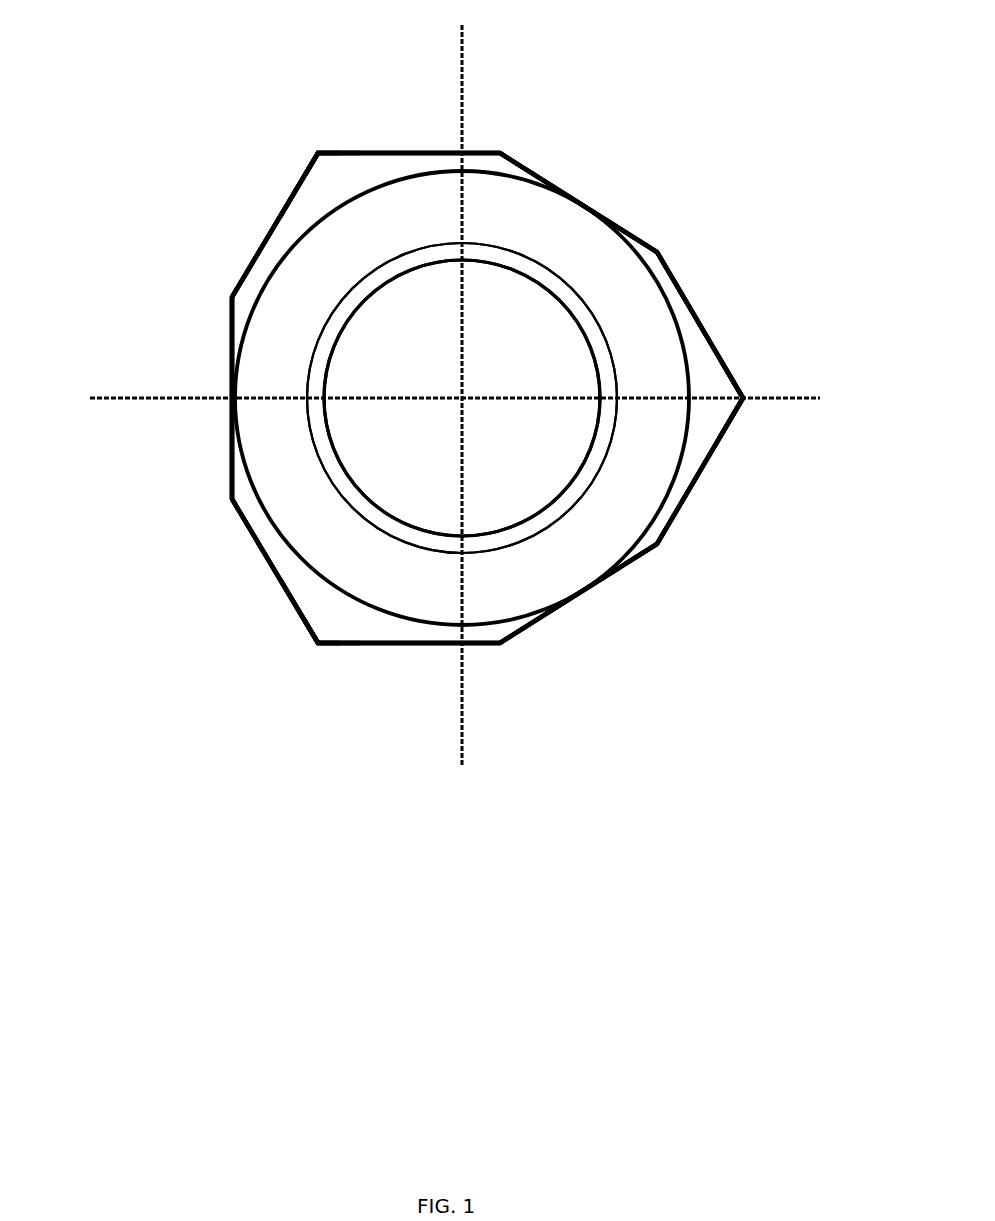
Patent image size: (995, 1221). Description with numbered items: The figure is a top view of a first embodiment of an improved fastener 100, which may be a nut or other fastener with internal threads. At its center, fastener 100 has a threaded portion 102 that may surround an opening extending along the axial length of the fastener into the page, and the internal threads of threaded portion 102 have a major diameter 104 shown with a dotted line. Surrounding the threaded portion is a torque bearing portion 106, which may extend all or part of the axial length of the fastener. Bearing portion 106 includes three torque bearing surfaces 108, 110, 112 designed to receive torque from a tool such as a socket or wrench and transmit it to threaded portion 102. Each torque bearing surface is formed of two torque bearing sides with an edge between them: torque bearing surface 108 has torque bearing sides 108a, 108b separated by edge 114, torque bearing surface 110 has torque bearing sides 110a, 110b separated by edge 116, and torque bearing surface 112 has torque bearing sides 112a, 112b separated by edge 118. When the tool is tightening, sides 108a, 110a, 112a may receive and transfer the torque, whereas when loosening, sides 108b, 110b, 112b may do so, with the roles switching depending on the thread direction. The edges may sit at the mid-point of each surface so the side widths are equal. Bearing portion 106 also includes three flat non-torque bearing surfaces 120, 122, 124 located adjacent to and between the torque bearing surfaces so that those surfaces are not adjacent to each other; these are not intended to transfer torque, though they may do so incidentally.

The fastener 100 is at (173, 80).
The threaded portion 102 is at (420, 522).
The major diameter 104 is at (587, 293).
The torque bearing portion 106 is at (208, 220).
The torque bearing surface 108 is at (335, 146).
The torque bearing side 108a is at (283, 203).
The torque bearing side 108b is at (383, 146).
The torque bearing surface 110 is at (737, 368).
The torque bearing side 110a is at (723, 343).
The torque bearing side 110b is at (715, 453).
The torque bearing surface 112 is at (340, 647).
The torque bearing side 112a is at (381, 648).
The torque bearing side 112b is at (282, 582).
The edge 114 is at (317, 146).
The edge 116 is at (747, 392).
The edge 118 is at (316, 645).
The non-torque bearing surface 120 is at (578, 190).
The non-torque bearing surface 122 is at (583, 593).
The non-torque bearing surface 124 is at (225, 353).